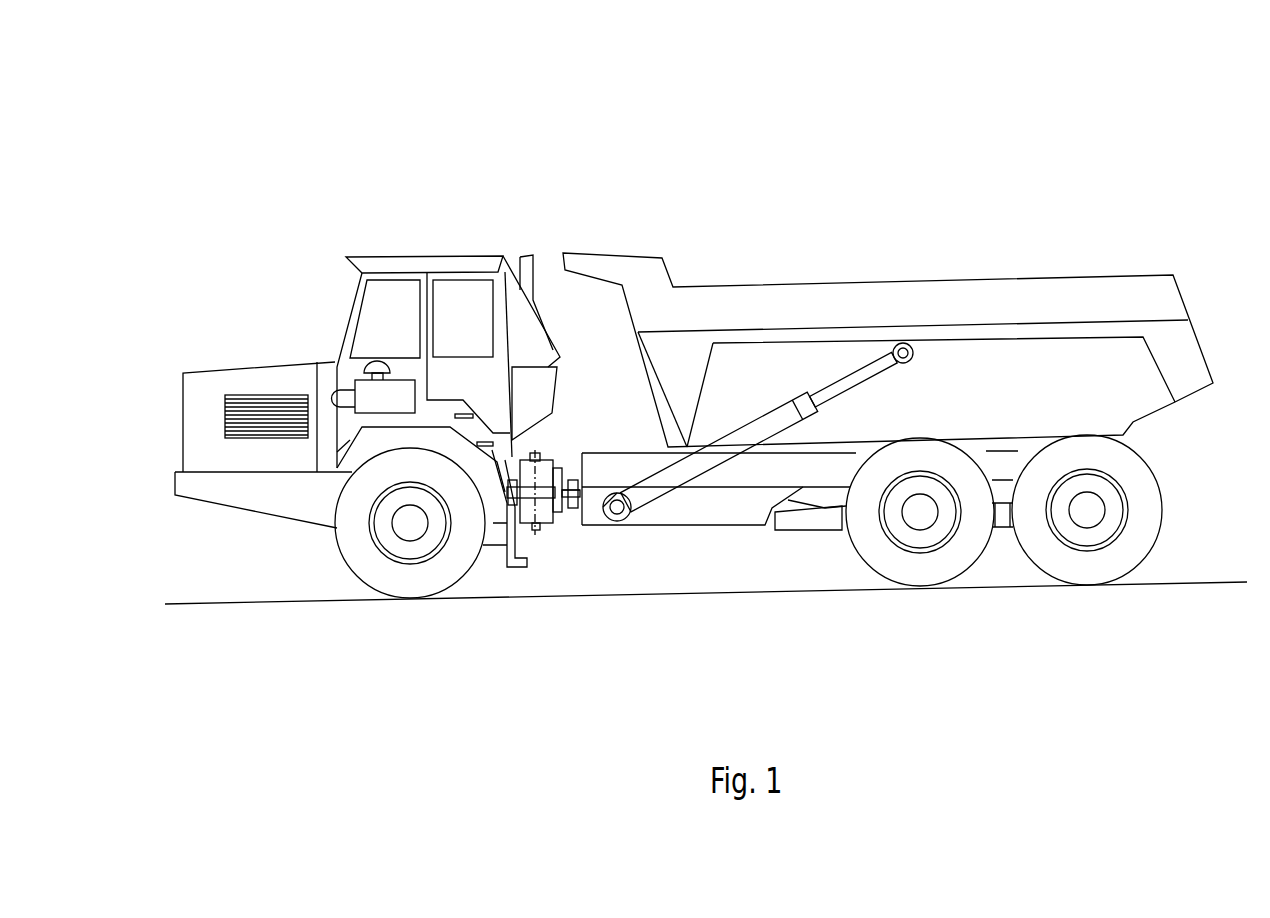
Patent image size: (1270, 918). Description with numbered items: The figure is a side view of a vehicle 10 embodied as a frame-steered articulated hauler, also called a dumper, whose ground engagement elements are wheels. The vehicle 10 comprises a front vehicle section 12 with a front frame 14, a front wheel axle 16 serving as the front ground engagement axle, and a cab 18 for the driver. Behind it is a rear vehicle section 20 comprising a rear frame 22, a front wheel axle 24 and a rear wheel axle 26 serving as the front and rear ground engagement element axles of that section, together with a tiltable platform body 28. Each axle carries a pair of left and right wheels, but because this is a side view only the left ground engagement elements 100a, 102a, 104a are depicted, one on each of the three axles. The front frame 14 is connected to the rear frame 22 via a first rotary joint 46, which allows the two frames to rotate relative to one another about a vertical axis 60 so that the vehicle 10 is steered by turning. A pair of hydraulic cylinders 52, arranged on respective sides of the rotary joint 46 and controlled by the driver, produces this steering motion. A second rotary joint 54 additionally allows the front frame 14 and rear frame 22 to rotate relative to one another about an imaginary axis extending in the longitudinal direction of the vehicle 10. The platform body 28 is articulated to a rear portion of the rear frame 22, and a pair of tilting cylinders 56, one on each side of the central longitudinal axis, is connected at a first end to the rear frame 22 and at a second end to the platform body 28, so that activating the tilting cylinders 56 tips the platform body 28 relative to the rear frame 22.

The vehicle 10 is at (900, 167).
The front vehicle section 12 is at (440, 236).
The front frame 14 is at (528, 560).
The front wheel axle 16 is at (410, 523).
The cab 18 is at (382, 265).
The rear vehicle section 20 is at (949, 250).
The rear frame 22 is at (708, 510).
The front wheel axle 24 is at (918, 512).
The rear wheel axle 26 is at (1087, 510).
The platform body 28 is at (1103, 292).
The first rotary joint 46 is at (580, 534).
The hydraulic cylinders 52 is at (547, 525).
The second rotary joint 54 is at (642, 540).
The tilting cylinders 56 is at (743, 452).
The vertical axis 60 is at (538, 535).
The left ground engagement element 100a is at (413, 586).
The left ground engagement element 102a is at (920, 572).
The left ground engagement element 104a is at (1088, 575).